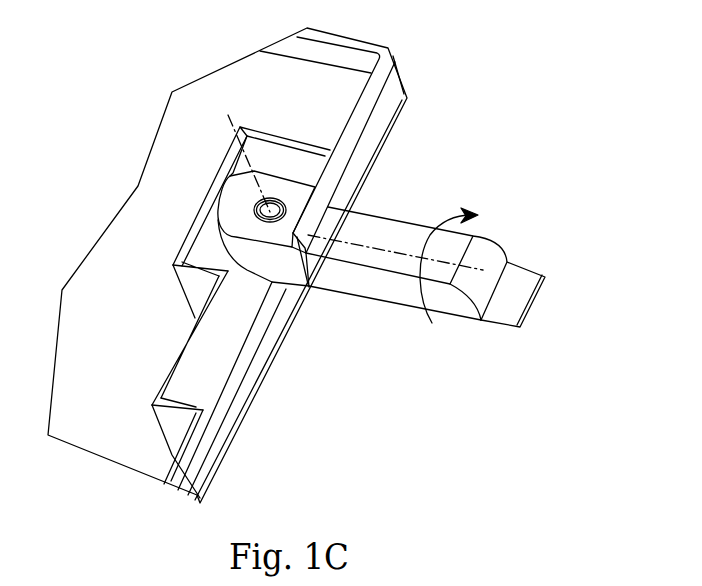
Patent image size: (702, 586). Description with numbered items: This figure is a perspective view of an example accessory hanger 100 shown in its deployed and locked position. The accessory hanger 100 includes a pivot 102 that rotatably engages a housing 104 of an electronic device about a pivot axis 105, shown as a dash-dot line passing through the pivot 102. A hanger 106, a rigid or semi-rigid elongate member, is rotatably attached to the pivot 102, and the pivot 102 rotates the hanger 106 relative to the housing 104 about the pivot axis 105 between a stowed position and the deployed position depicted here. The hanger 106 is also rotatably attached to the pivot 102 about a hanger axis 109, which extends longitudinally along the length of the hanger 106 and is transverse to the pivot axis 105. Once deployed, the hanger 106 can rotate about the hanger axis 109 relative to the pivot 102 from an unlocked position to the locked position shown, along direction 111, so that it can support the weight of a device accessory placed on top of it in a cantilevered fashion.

The accessory hanger 100 is at (332, 265).
The pivot 102 is at (232, 206).
The housing 104 is at (134, 309).
The pivot axis 105 is at (235, 128).
The hanger 106 is at (339, 275).
The hanger axis 109 is at (357, 245).
The direction 111 is at (422, 292).